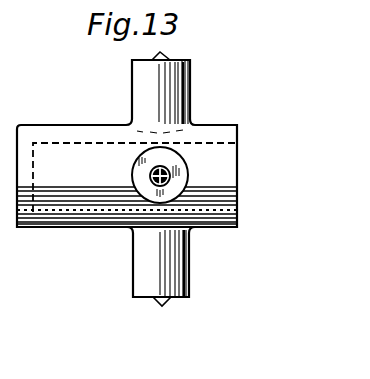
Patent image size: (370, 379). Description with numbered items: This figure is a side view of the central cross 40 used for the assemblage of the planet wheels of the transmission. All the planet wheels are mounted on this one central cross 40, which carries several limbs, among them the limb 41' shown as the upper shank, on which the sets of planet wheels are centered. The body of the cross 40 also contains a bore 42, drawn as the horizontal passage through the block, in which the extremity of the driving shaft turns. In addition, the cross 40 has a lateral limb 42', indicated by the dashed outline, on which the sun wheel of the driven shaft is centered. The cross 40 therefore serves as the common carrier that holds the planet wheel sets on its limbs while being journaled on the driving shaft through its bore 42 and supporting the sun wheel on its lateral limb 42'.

The central cross 40 is at (84, 197).
The limb 41' is at (183, 83).
The bore 42 is at (148, 181).
The lateral limb 42' is at (135, 137).